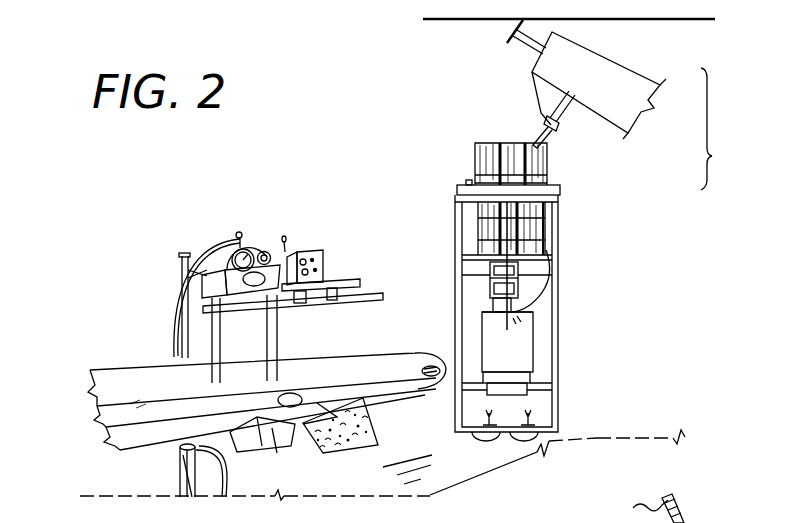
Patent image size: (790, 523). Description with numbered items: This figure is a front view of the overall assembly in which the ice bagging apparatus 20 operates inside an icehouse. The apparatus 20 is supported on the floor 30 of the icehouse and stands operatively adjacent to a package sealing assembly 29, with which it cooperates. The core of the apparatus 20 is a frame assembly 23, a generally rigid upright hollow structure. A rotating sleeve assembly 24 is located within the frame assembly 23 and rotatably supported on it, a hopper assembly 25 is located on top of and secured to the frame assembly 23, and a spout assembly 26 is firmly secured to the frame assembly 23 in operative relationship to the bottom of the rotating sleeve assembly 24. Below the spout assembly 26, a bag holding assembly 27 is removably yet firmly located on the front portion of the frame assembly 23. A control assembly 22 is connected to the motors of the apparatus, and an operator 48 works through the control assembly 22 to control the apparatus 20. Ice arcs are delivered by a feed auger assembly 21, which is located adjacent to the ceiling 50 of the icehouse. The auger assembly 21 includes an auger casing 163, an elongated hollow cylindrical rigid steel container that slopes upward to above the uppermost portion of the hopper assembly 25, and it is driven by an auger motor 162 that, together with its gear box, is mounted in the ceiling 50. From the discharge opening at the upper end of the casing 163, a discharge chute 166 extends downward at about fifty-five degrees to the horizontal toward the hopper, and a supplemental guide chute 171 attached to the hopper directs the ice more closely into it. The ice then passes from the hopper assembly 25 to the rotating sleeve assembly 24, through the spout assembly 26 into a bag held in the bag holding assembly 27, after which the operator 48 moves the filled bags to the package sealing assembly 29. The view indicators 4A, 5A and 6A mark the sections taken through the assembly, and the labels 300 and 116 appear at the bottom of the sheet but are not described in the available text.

The ceiling 50 is at (449, 22).
The feed auger assembly 21 is at (526, 60).
The auger casing 163 is at (608, 75).
The discharge chute 166 is at (558, 110).
The supplemental guide chute 171 is at (552, 140).
The section 4A is at (723, 129).
The hopper assembly 25 is at (474, 162).
The frame assembly 23 is at (457, 214).
The rotating sleeve assembly 24 is at (477, 237).
The spout assembly 26 is at (486, 290).
The section 6A is at (512, 212).
The section 5A is at (578, 285).
The control assembly 22 is at (481, 313).
The bag holding assembly 27 is at (481, 345).
The operator 48 is at (492, 424).
The floor 30 is at (413, 463).
The apparatus 20 is at (481, 49).
The package sealing assembly 29 is at (175, 351).
The auger motor 162 is at (644, 508).
The element 300 is at (414, 518).
The element 116 is at (459, 518).